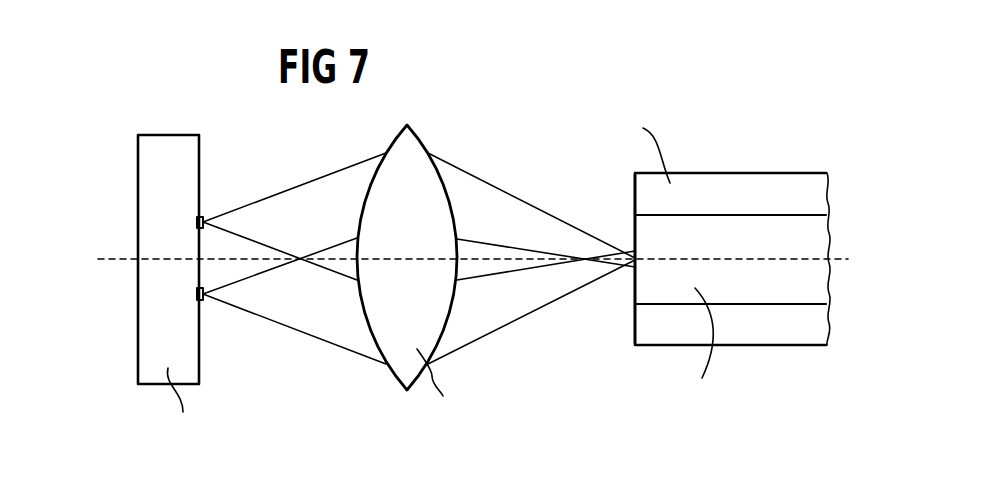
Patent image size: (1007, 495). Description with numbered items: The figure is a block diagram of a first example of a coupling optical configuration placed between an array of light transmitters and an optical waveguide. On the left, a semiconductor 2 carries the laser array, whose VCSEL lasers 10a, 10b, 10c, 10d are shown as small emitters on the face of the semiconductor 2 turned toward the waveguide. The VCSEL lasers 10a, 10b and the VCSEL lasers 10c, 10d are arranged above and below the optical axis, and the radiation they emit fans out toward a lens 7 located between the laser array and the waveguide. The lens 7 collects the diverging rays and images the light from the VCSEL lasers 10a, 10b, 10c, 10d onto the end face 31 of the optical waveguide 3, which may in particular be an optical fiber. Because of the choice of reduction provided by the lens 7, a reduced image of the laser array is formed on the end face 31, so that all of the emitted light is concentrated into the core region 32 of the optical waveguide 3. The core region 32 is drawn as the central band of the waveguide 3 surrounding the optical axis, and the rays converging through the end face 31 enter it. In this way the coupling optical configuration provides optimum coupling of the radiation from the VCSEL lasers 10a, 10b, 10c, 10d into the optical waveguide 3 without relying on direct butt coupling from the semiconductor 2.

The semiconductor 2 is at (170, 145).
The VCSEL laser 10a is at (120, 208).
The VCSEL laser 10b is at (186, 222).
The VCSEL laser 10c is at (120, 309).
The VCSEL laser 10d is at (186, 294).
The lens 7 is at (417, 132).
The optical waveguide 3 is at (716, 249).
The end face 31 is at (631, 223).
The core region 32 is at (820, 283).